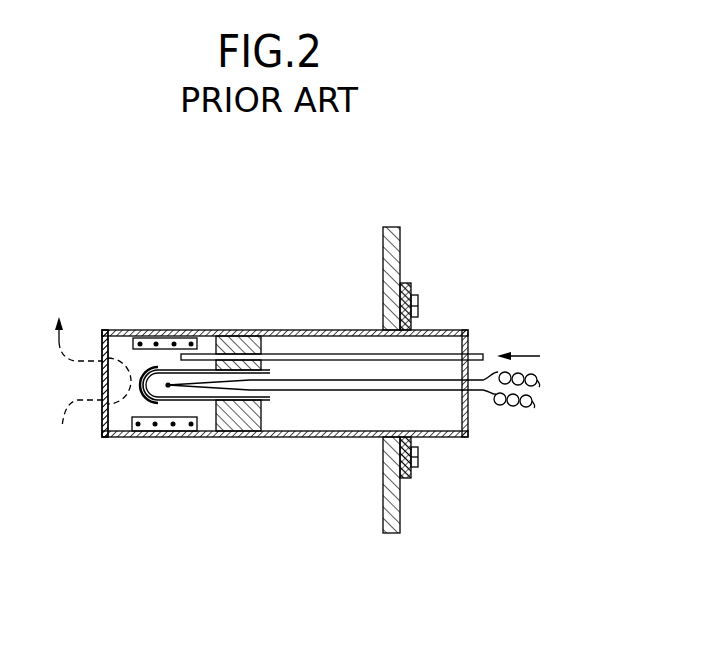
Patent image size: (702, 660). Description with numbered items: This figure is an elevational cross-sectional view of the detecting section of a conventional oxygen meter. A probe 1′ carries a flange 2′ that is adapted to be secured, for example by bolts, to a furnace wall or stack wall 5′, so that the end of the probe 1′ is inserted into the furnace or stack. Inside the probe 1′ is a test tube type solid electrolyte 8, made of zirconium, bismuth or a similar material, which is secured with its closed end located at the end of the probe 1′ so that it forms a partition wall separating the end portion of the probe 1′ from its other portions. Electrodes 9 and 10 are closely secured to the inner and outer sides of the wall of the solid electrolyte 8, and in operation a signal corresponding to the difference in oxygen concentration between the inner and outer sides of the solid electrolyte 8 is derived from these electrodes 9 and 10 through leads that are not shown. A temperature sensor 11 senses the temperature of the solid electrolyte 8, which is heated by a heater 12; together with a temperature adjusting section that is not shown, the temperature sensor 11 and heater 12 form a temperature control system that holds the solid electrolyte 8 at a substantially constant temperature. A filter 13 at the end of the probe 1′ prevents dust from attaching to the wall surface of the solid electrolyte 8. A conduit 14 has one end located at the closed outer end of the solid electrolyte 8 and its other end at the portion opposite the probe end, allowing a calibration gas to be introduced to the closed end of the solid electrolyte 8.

The probe 1′ is at (200, 330).
The flange 2′ is at (405, 283).
The furnace wall or stack wall 5′ is at (385, 270).
The solid electrolyte 8 is at (205, 402).
The electrode 9 is at (168, 400).
The electrode 10 is at (140, 398).
The temperature sensor 11 is at (313, 390).
The heater 12 is at (168, 331).
The filter 13 is at (102, 335).
The conduit 14 is at (305, 354).